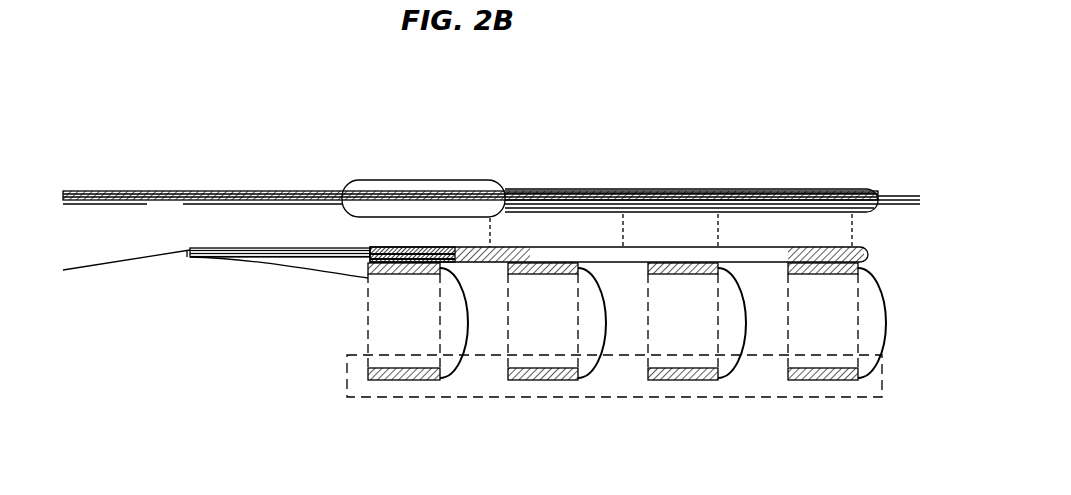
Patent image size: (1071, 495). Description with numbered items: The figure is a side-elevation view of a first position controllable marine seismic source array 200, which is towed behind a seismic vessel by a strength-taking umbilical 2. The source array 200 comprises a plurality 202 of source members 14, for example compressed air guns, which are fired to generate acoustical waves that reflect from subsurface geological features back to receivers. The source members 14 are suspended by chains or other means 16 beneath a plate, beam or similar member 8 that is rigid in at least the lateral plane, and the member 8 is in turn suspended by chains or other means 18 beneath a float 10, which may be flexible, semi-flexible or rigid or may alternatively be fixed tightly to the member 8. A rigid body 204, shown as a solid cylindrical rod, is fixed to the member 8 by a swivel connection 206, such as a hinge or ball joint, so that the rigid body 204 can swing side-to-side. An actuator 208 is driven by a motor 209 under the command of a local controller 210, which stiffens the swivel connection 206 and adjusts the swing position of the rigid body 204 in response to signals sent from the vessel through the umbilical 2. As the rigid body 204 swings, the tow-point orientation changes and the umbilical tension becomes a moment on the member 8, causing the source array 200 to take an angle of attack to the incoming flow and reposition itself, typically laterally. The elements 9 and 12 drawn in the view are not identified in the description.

The strength-taking umbilical 2 is at (100, 266).
The plate, beam or similar member 8 is at (665, 247).
The wire terminal 9 is at (187, 257).
The float 10 is at (480, 180).
The lead body 12 is at (118, 190).
The source members 14 is at (523, 378).
The chains or other means 16 is at (578, 338).
The chains or other means 18 is at (852, 230).
The position controllable marine seismic source array 200 is at (580, 162).
The plurality of source members 202 is at (598, 397).
The rigid body 204 is at (257, 248).
The swivel connection 206 is at (362, 252).
The actuator 208 is at (363, 247).
The motor 209 is at (402, 260).
The local controller 210 is at (437, 260).